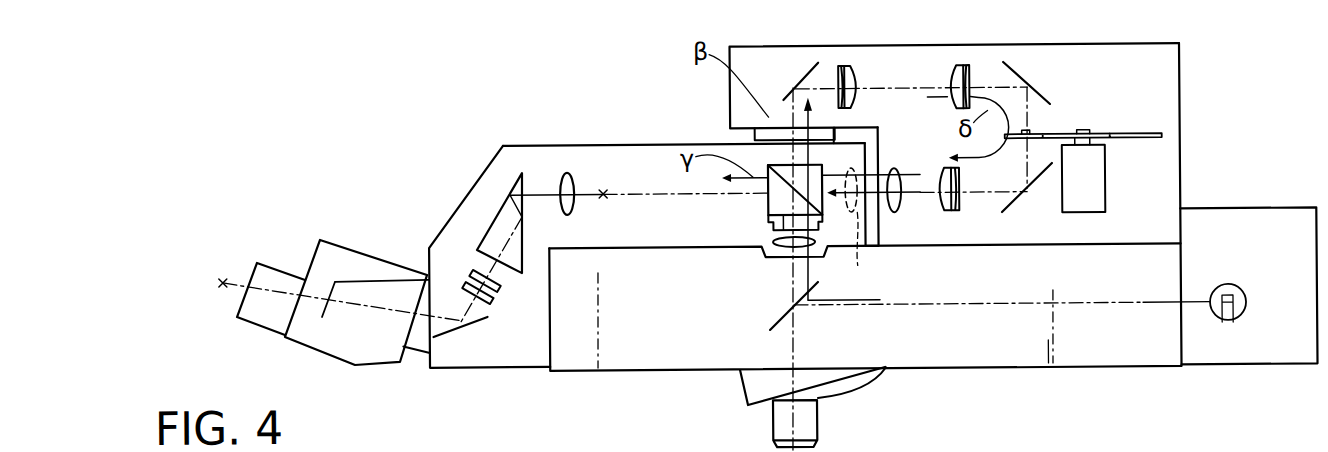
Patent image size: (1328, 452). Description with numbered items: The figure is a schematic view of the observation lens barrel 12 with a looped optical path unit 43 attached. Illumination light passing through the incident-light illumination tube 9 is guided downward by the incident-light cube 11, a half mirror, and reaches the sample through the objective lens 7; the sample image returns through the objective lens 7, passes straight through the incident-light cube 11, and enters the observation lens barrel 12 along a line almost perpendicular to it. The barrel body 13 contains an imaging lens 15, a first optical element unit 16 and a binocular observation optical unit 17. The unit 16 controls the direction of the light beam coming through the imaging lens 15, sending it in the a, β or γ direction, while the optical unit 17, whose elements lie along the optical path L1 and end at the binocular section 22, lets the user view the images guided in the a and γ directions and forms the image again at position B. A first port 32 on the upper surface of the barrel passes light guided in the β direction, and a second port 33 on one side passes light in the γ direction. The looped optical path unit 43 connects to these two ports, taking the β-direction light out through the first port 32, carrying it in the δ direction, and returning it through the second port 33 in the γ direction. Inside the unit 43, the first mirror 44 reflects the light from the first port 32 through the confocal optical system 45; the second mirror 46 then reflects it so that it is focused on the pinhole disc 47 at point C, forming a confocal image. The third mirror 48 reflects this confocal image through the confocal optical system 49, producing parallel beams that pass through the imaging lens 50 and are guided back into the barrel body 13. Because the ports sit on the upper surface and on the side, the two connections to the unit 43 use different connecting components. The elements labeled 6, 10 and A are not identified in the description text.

The lens holder 6 is at (753, 383).
The objective lens 7 is at (806, 419).
The incident-light illumination tube 9 is at (1114, 344).
The drive unit 10 is at (1247, 307).
The incident-light cube 11 is at (789, 313).
The observation lens barrel 12 is at (562, 122).
The barrel body 13 is at (619, 156).
The imaging lens 15 is at (768, 237).
The first optical element unit 16 is at (821, 167).
The binocular observation optical unit 17 is at (484, 188).
The binocular section 22 is at (342, 259).
The first port 32 is at (760, 136).
The second port 33 is at (873, 163).
The looped optical path unit 43 is at (1210, 99).
The first mirror 44 is at (801, 78).
The confocal optical system 45 is at (947, 77).
The second mirror 46 is at (1029, 88).
The pinhole disc 47 is at (1057, 130).
The third mirror 48 is at (1018, 200).
The confocal optical system 49 is at (951, 213).
The imaging lens 50 is at (897, 218).
The point A is at (604, 197).
The position B is at (224, 276).
The point C is at (1035, 118).
The optical path L1 is at (688, 195).